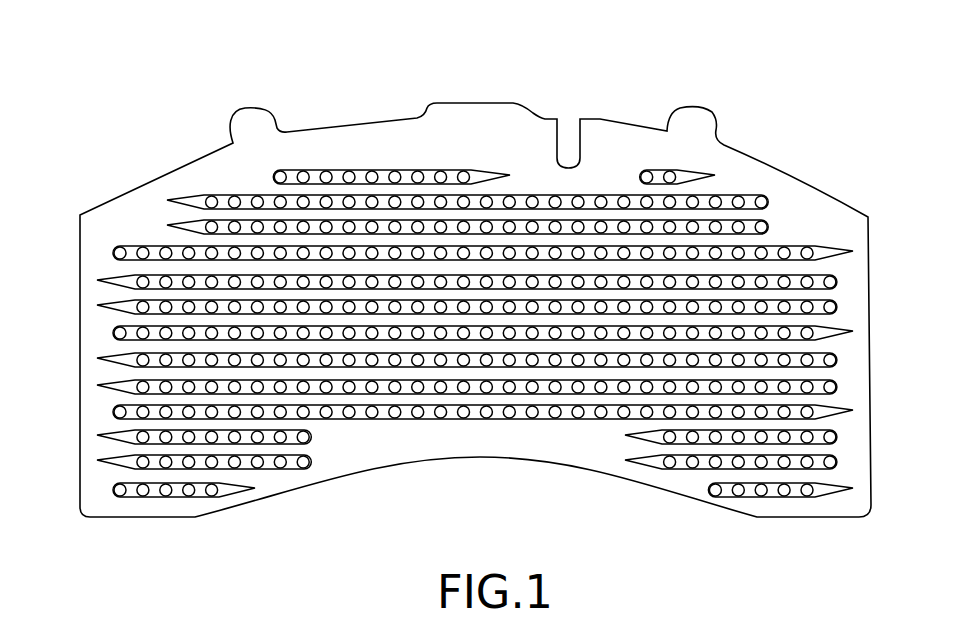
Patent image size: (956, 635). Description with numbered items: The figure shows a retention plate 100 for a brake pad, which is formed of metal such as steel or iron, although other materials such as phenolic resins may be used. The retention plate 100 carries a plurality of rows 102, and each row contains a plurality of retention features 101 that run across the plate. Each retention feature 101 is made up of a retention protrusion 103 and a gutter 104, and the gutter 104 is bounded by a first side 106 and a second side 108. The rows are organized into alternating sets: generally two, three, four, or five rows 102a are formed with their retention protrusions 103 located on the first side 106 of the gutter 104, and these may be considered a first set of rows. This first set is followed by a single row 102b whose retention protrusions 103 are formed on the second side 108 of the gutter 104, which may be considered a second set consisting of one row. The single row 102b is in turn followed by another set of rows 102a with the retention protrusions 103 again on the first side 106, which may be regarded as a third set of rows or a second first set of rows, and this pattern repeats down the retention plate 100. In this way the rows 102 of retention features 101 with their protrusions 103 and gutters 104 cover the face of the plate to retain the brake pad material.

The retention plate 100 is at (821, 106).
The retention feature 101 is at (817, 225).
The rows 102 is at (876, 196).
The first set of rows 102a is at (187, 237).
The single row 102b is at (117, 254).
The retention protrusion 103 is at (373, 170).
The gutter 104 is at (483, 170).
The first side 106 is at (163, 262).
The second side 108 is at (153, 260).